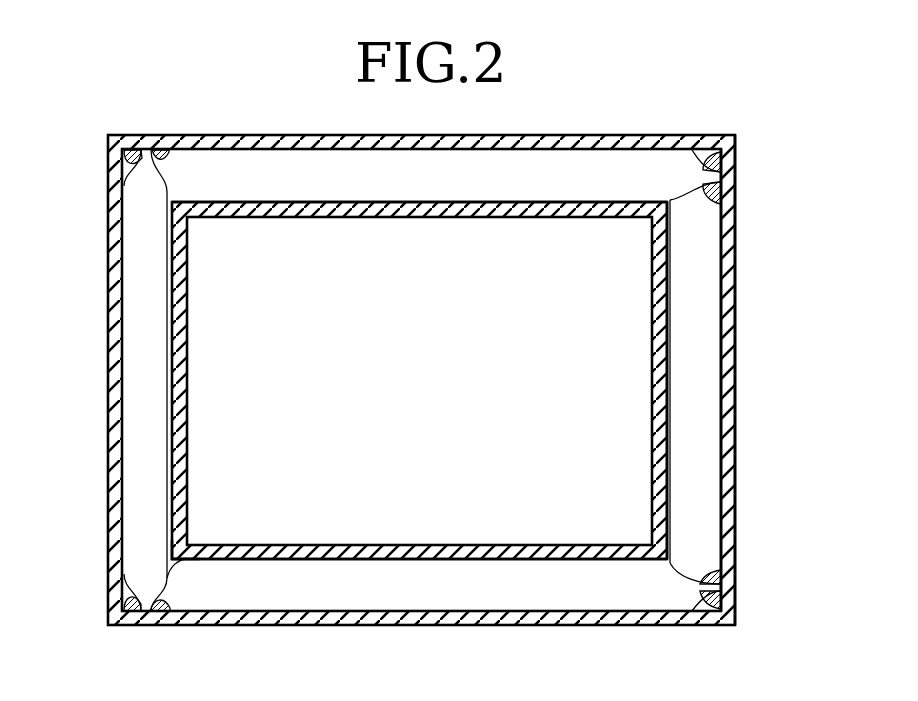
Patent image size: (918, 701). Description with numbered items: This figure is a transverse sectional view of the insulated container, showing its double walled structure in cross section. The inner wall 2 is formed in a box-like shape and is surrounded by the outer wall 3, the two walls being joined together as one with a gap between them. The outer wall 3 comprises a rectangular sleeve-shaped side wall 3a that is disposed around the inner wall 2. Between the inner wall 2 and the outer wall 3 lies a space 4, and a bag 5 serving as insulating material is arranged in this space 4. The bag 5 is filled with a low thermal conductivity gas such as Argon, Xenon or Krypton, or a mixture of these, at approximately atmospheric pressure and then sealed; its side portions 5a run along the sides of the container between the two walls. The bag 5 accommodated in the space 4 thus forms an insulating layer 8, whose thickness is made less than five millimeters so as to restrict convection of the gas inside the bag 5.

The inner wall 2 is at (369, 221).
The outer wall 3 is at (108, 438).
The side wall 3a is at (722, 350).
The space 4 is at (170, 336).
The bag 5 is at (190, 545).
The side portions 5a is at (469, 203).
The insulating layer 8 is at (703, 282).